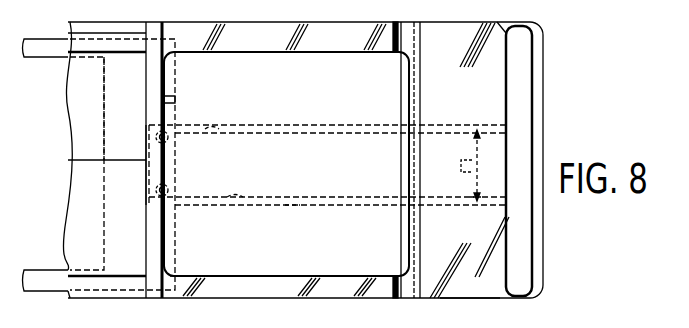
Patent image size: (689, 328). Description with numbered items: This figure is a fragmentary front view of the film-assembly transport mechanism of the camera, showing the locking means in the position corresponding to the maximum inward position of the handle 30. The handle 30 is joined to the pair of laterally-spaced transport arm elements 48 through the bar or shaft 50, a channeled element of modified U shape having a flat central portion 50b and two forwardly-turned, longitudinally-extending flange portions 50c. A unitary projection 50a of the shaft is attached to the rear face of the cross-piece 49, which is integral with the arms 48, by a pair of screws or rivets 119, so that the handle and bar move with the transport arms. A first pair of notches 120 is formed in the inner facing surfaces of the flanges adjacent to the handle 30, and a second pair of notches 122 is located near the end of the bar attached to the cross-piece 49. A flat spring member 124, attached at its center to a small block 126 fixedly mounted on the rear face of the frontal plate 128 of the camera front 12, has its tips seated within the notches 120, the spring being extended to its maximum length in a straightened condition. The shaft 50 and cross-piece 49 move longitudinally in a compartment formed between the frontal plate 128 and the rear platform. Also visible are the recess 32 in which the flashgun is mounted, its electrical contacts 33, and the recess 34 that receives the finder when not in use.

The camera front or frontal housing section 12 is at (358, 22).
The handle 30 is at (531, 22).
The recess 32 is at (392, 92).
The electrical contacts 33 is at (175, 99).
The recess 34 is at (267, 255).
The film assembly transport arm elements 48 is at (54, 39).
The cross-piece 49 is at (104, 97).
The bar or shaft 50 is at (271, 126).
The unitary projection of the shaft 50a is at (147, 167).
The flat central portion 50b is at (263, 188).
The flange portions 50c is at (293, 205).
The screws or rivets 119 is at (166, 138).
The first pair of recesses or notches 120 is at (476, 196).
The second pair of notches 122 is at (210, 130).
The flat spring member 124 is at (476, 134).
The small block 126 is at (460, 166).
The frontal plate 128 is at (472, 293).